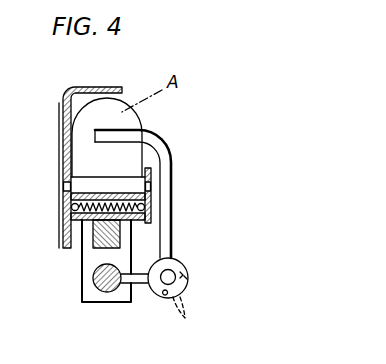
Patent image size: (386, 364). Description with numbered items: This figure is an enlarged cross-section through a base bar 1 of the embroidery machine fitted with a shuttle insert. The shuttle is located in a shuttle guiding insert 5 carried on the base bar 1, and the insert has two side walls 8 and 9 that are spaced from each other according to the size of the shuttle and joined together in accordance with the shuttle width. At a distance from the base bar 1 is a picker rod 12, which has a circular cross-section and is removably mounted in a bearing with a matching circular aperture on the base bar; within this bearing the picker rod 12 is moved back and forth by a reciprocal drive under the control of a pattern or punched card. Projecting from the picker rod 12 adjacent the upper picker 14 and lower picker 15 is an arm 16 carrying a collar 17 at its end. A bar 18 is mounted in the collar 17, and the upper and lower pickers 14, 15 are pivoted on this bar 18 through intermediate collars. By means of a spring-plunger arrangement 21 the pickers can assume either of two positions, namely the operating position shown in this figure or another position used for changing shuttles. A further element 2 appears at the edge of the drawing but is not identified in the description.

The base bar 1 is at (87, 292).
The element 2 is at (3, 224).
The shuttle guiding insert 5 is at (51, 151).
The side wall 8 is at (62, 105).
The side wall 9 is at (148, 172).
The picker rod 12 is at (93, 277).
The upper picker 14 is at (176, 194).
The lower picker 15 is at (173, 195).
The arm 16 is at (144, 272).
The collar 17 is at (155, 295).
The bar 18 is at (175, 272).
The spring-plunger arrangement 21 is at (191, 317).